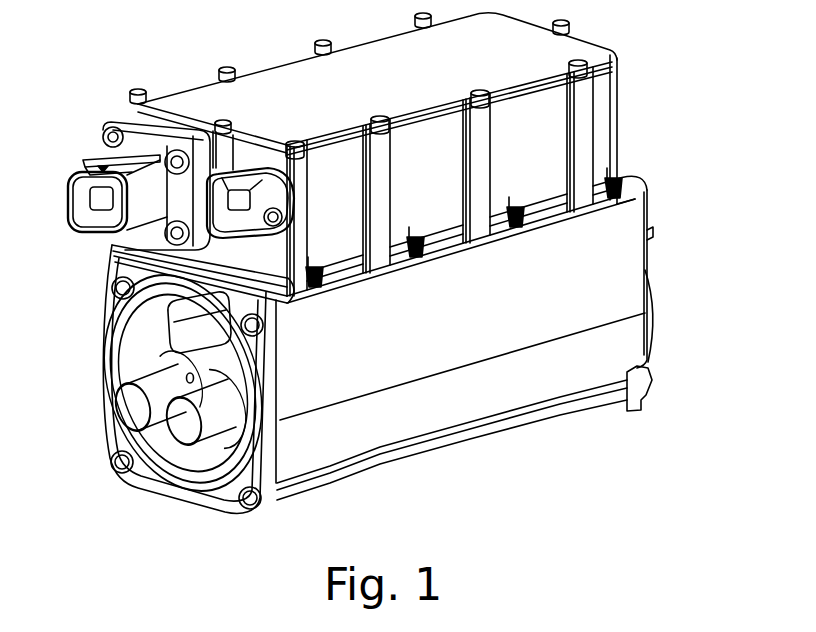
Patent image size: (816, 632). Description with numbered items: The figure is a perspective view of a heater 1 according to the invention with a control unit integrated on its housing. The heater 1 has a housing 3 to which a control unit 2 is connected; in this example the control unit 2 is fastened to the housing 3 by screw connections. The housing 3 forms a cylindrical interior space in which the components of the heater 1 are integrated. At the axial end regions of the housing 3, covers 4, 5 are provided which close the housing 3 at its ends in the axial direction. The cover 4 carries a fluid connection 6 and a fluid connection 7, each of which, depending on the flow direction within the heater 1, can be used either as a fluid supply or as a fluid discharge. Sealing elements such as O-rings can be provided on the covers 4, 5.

The heater 1 is at (653, 175).
The control unit 2 is at (316, 122).
The housing 3 is at (470, 367).
The cover 4 is at (178, 473).
The cover 5 is at (656, 298).
The fluid connection 6 is at (130, 410).
The fluid connection 7 is at (181, 438).